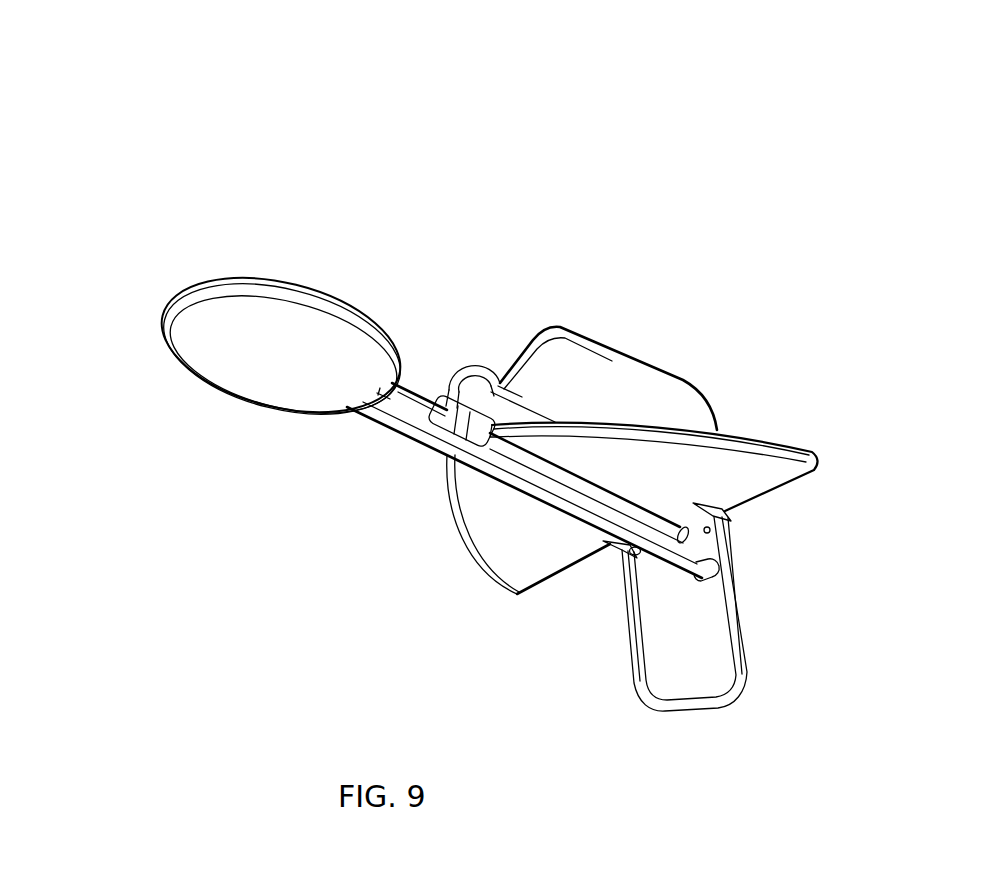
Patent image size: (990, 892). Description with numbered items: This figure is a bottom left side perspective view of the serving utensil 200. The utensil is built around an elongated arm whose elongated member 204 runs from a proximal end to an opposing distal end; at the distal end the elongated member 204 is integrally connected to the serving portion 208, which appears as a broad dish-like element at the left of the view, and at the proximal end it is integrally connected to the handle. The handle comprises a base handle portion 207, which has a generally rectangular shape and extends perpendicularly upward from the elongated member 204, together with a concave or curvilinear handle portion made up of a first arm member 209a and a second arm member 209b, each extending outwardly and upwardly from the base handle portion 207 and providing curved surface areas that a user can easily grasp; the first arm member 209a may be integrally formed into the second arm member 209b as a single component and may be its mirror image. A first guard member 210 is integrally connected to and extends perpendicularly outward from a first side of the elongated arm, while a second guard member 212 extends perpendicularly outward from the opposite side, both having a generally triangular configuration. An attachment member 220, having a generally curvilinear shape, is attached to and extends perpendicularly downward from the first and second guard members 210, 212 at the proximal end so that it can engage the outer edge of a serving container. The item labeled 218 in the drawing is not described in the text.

The serving utensil 200 is at (690, 168).
The elongated member 204 is at (410, 431).
The base handle portion 207 is at (465, 396).
The serving portion 208 is at (248, 376).
The first arm member 209a is at (477, 372).
The second arm member 209b is at (650, 388).
The first guard member 210 is at (503, 568).
The second guard member 212 is at (765, 462).
The pin 218 is at (655, 547).
The attachment member 220 is at (713, 692).